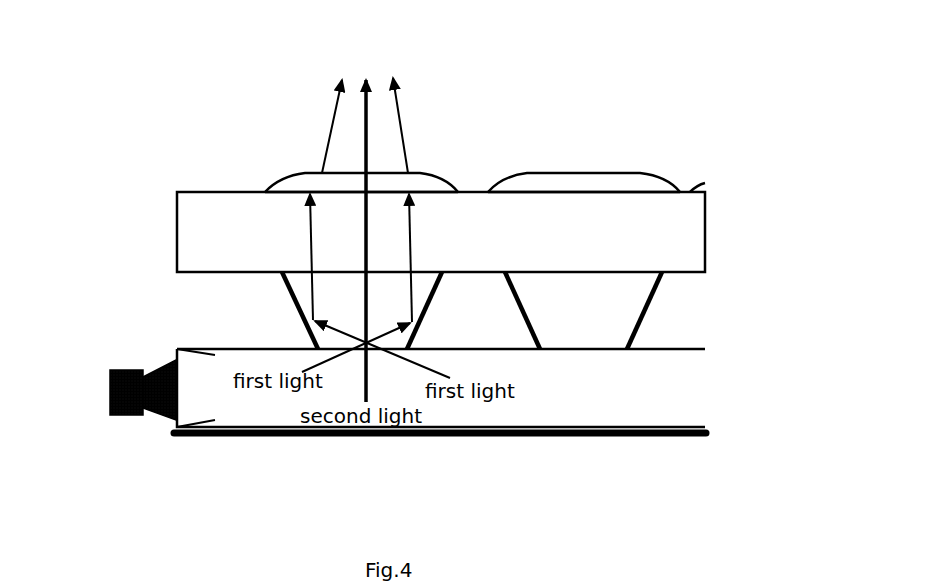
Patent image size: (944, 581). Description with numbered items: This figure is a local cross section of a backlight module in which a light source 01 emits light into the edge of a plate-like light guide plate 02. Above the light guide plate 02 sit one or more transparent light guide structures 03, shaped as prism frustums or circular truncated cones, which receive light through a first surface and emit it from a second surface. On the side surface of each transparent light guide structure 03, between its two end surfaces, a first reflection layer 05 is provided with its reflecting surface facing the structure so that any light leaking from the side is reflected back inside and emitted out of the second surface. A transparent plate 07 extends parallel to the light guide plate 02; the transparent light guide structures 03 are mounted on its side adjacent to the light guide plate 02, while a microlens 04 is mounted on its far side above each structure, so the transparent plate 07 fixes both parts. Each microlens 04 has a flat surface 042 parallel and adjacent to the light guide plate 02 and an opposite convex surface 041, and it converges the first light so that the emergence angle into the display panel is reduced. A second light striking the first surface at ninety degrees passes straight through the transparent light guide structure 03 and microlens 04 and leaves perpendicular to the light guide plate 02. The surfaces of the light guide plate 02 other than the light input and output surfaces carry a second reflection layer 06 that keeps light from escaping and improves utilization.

The light source 01 is at (128, 418).
The light guide plate 02 is at (237, 400).
The transparent light guide structure 03 is at (587, 318).
The microlens 04 is at (516, 153).
The convex surface 041 is at (615, 172).
The flat surface 042 is at (600, 194).
The first reflection layer 05 is at (290, 298).
The second reflection layer 06 is at (445, 440).
The transparent plate 07 is at (200, 226).